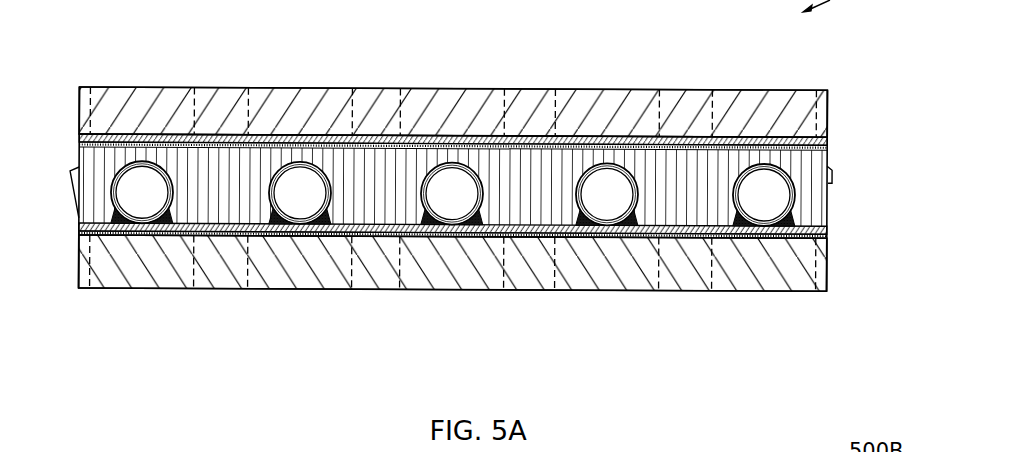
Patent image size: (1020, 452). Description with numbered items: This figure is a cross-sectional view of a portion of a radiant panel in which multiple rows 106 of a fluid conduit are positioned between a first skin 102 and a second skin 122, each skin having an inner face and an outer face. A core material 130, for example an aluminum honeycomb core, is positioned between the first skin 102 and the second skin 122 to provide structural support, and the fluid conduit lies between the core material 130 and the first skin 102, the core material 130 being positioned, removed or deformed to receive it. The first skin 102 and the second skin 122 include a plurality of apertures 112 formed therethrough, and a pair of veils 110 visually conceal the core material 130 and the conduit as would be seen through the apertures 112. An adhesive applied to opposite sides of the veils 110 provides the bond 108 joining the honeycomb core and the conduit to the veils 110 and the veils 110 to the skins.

The first skin 102 is at (79, 250).
The rows of fluid conduit 106 is at (143, 161).
The adhesive bond 108 is at (230, 138).
The veils 110 is at (180, 134).
The apertures 112 is at (233, 86).
The second skin 122 is at (79, 88).
The core material 130 is at (233, 200).